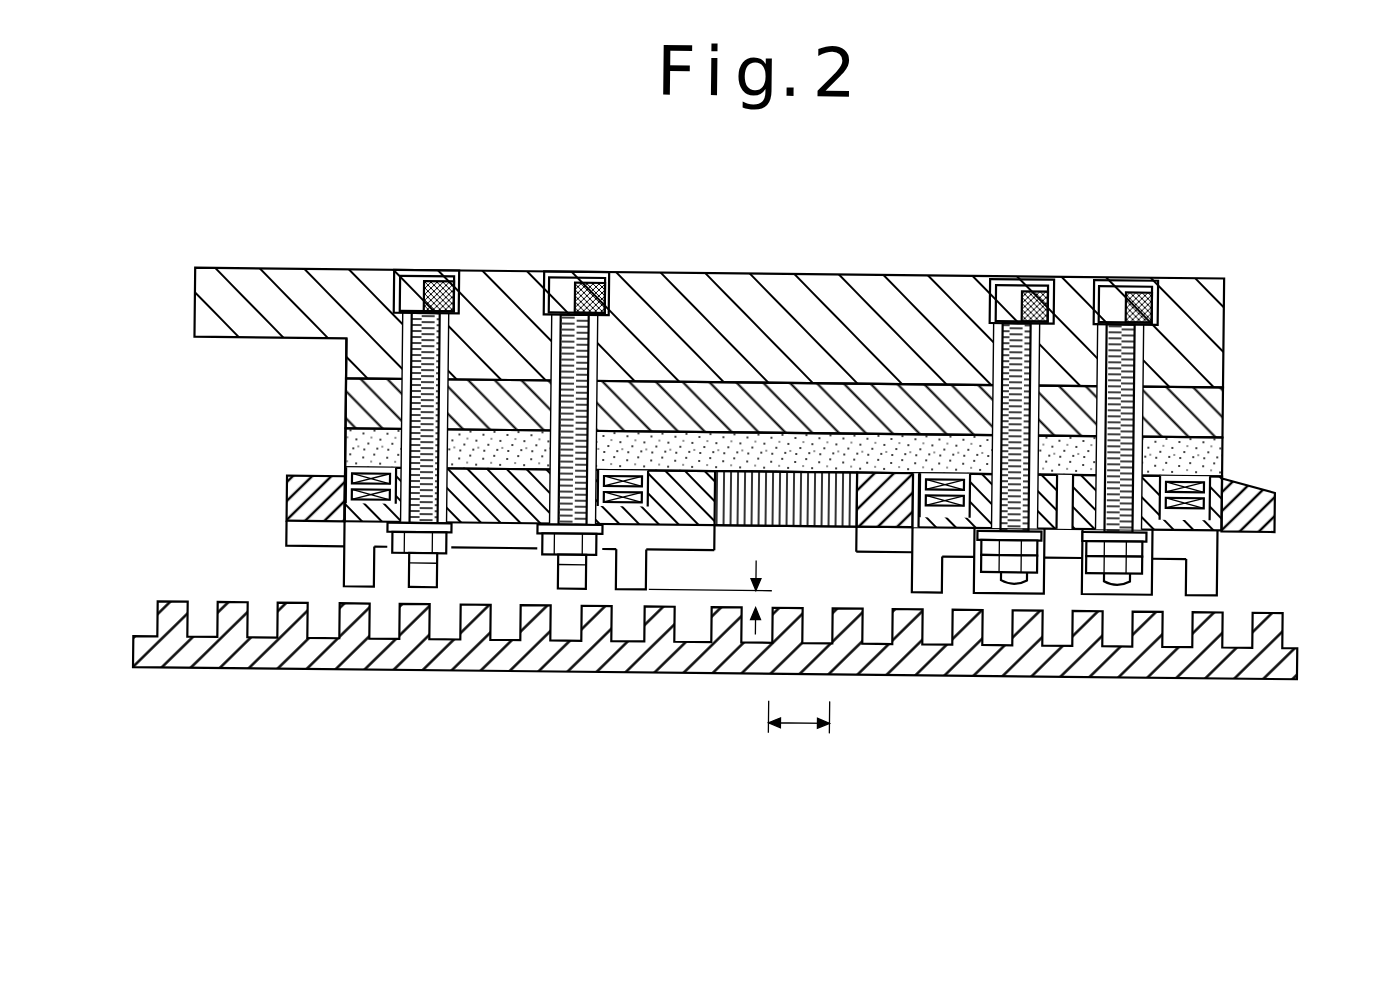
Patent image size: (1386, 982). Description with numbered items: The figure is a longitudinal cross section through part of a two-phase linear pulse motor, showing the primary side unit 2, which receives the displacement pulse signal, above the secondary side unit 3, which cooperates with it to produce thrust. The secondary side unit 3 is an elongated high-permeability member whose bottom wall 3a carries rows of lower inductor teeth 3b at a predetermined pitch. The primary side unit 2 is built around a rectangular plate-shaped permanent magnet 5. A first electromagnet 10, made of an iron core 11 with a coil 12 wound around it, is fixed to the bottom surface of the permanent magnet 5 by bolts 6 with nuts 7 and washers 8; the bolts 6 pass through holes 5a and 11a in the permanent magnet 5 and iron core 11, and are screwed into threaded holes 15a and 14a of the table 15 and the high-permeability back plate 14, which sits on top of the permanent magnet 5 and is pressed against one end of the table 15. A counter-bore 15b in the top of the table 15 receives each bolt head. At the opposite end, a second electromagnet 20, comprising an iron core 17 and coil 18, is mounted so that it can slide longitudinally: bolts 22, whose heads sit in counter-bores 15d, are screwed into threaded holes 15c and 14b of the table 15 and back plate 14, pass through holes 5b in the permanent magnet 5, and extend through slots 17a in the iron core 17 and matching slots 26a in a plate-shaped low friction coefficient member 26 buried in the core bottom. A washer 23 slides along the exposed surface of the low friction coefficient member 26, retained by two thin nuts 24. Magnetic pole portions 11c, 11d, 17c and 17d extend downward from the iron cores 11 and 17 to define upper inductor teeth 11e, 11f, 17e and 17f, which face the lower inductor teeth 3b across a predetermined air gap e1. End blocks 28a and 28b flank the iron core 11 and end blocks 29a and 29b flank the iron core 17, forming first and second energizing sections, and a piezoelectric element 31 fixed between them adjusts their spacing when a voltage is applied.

The primary side unit 2 is at (1244, 438).
The secondary side unit 3 is at (715, 683).
The bottom wall 3a is at (207, 660).
The inductor teeth 3b is at (232, 615).
The permanent magnet 5 is at (350, 445).
The holes 5a is at (414, 440).
The holes 5b is at (1034, 445).
The bolts 6 is at (515, 364).
The nuts 7 is at (420, 590).
The washers 8 is at (400, 556).
The first electromagnet 10 is at (342, 562).
The iron core 11 is at (494, 500).
The holes 11a is at (440, 480).
The magnetic pole portion 11c is at (355, 535).
The magnetic pole portion 11d is at (636, 548).
The upper inductor tooth 11e is at (357, 590).
The upper inductor tooth 11f is at (604, 578).
The coil 12 is at (356, 485).
The back plate 14 is at (350, 400).
The threaded holes 14a is at (430, 382).
The threaded holes 14b is at (1000, 382).
The table 15 is at (251, 270).
The threaded holes 15a is at (452, 314).
The counter-bore 15b is at (446, 290).
The threaded holes 15c is at (994, 305).
The counter-bore 15d is at (1030, 300).
The iron core 17 is at (1067, 527).
The slots 17a is at (998, 500).
The magnetic pole portion 17c is at (912, 540).
The magnetic pole portion 17d is at (1215, 546).
The upper inductor tooth 17e is at (975, 590).
The upper inductor tooth 17f is at (1170, 595).
The coil 18 is at (928, 480).
The second electromagnet 20 is at (1222, 580).
The bolts 22 is at (1040, 300).
The washer 23 is at (1015, 570).
The thin nuts 24 is at (1040, 553).
The low friction coefficient member 26 is at (932, 590).
The slot 26a is at (1002, 445).
The end block 28a is at (297, 505).
The end block 28b is at (718, 440).
The end block 29a is at (1278, 508).
The end block 29b is at (865, 471).
The piezoelectric element 31 is at (788, 471).
The air gap e1 is at (719, 595).